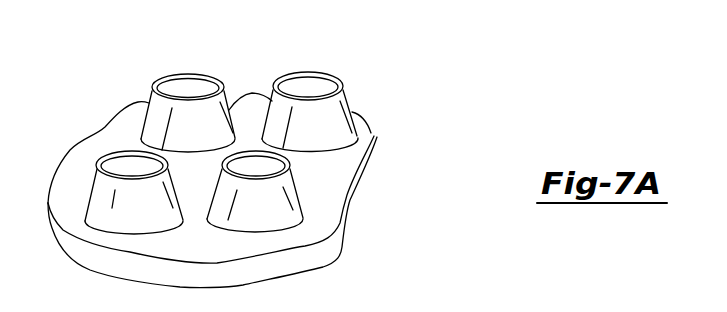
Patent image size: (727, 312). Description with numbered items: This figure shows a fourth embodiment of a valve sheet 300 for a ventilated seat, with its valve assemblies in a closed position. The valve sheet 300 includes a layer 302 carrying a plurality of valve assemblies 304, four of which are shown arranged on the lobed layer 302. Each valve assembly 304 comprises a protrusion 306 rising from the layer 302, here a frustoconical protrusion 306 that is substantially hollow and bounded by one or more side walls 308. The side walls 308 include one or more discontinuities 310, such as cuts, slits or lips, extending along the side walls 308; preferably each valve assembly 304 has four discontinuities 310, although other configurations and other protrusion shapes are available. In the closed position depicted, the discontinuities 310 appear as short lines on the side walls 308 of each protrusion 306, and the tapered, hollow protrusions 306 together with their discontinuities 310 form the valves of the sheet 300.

The valve sheet 300 is at (236, 163).
The layer 302 is at (71, 193).
The valve assembly 304 is at (318, 206).
The protrusion 306 is at (318, 78).
The side wall 308 is at (183, 132).
The discontinuity 310 is at (283, 133).